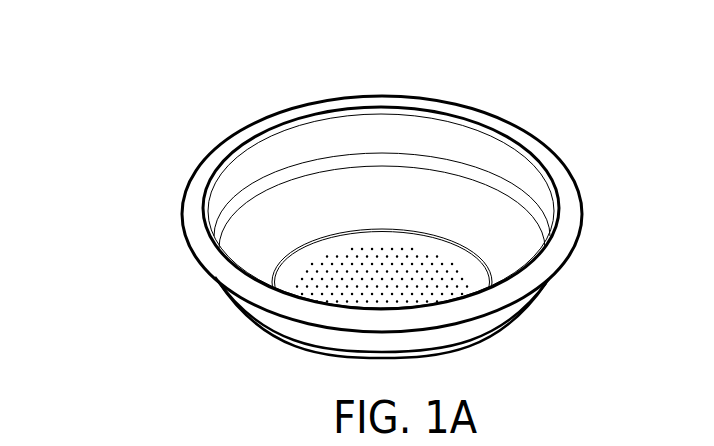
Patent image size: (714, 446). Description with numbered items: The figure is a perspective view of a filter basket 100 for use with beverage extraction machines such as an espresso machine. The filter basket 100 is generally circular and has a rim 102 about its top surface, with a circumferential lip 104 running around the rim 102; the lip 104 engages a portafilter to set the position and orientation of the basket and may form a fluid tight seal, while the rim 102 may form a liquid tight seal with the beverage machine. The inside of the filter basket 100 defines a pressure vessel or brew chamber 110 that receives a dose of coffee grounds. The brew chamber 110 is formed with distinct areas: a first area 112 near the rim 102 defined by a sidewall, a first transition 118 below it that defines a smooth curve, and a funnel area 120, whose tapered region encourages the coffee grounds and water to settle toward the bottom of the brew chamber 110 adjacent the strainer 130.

The filter basket 100 is at (152, 95).
The rim 102 is at (558, 181).
The circumferential lip 104 is at (570, 252).
The brew chamber 110 is at (403, 208).
The first area 112 is at (407, 129).
The first transition 118 is at (473, 180).
The funnel area 120 is at (511, 251).
The strainer 130 is at (330, 278).